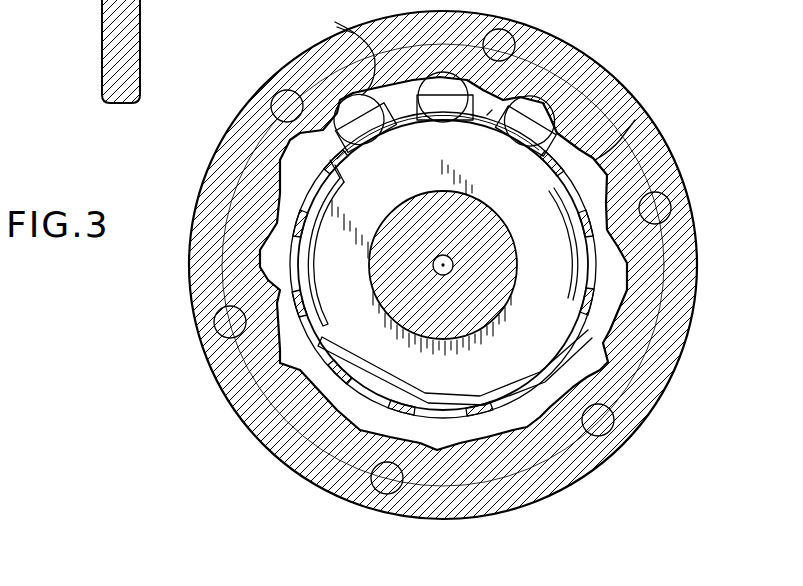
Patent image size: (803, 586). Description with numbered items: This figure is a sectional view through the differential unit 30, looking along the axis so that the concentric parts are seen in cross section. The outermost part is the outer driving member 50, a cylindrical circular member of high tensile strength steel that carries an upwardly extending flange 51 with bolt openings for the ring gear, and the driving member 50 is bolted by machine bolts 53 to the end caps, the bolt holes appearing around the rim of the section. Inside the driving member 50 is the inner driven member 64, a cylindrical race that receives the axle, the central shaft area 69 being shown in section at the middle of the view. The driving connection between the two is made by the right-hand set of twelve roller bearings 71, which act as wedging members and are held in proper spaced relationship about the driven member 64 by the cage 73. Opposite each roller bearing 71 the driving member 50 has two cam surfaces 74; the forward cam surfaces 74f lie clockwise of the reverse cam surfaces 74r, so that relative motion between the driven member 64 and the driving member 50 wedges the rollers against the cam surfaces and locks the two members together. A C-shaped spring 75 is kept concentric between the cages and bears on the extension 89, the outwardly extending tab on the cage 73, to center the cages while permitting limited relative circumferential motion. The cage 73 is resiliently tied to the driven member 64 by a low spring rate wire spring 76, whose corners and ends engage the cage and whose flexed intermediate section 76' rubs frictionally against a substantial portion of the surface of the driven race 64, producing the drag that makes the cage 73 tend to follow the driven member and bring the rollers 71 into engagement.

The shaft assembly 30 is at (217, 6).
The outer driving member 50 is at (643, 95).
The flange 51 is at (112, 42).
The machine bolts 53 is at (274, 100).
The driven member 64 is at (506, 189).
The shaft 69 is at (510, 257).
The roller bearings 71 is at (577, 28).
The cage 73 is at (300, 232).
The cam surfaces 74 is at (445, 72).
The forward cam surfaces 74f is at (690, 135).
The reverse cam surfaces 74r is at (340, 112).
The C-shaped spring 75 is at (386, 133).
The wire spring 76 is at (357, 180).
The intermediate section of wire spring 76' is at (450, 291).
The extension 89 is at (487, 115).